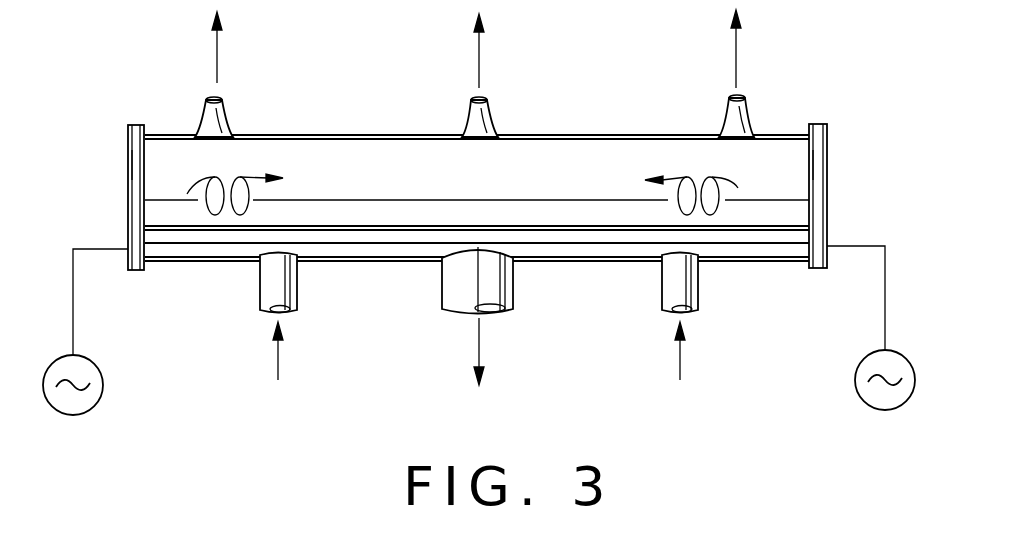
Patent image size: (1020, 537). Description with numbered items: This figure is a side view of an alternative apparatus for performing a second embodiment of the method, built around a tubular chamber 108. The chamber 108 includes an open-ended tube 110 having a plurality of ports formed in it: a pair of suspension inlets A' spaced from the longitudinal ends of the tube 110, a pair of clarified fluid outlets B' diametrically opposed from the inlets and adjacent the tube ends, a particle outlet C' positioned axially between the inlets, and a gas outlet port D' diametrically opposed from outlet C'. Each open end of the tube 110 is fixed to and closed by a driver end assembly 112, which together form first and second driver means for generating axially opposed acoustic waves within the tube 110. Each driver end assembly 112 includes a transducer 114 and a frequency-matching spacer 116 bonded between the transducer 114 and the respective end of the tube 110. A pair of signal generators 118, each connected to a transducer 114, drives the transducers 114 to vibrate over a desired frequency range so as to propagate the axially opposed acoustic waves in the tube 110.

The tubular chamber 108 is at (582, 129).
The open-ended tube 110 is at (318, 133).
The driver end assembly 112 is at (130, 118).
The transducer 114 is at (126, 165).
The frequency-matching spacer 116 is at (140, 270).
The signal generator 118 is at (103, 387).